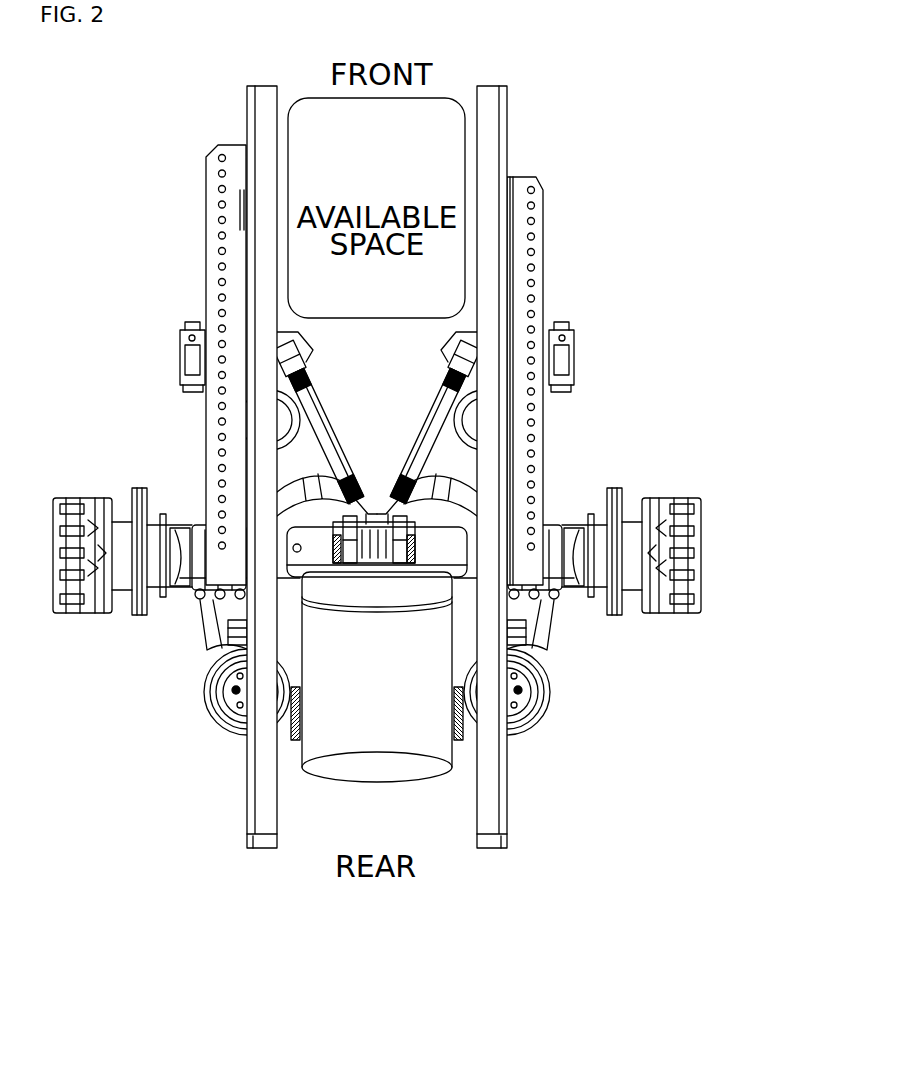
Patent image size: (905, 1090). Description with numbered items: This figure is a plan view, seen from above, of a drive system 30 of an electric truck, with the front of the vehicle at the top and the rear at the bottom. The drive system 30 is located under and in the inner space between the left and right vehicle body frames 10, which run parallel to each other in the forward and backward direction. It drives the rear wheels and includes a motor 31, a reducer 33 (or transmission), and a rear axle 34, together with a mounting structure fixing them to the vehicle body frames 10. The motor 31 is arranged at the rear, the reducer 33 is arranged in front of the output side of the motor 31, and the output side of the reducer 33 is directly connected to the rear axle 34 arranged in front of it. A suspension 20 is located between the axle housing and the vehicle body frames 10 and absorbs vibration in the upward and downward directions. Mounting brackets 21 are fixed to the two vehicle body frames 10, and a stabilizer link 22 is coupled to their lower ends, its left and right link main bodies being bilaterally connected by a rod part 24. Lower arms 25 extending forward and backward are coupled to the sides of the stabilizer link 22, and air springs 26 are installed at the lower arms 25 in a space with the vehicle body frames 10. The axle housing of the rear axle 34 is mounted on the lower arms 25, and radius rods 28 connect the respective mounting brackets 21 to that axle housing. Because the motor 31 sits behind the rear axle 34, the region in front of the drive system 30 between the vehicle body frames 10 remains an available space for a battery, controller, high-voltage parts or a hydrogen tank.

The vehicle body frames 10 is at (485, 795).
The suspension 20 is at (393, 604).
The mounting brackets 21 is at (563, 355).
The stabilizer link 22 is at (370, 483).
The rod part 24 is at (284, 453).
The lower arms 25 is at (525, 628).
The air springs 26 is at (545, 720).
The radius rods 28 is at (315, 410).
The drive system 30 is at (297, 632).
The motor 31 is at (330, 732).
The reducer 33 is at (440, 597).
The rear axle 34 is at (450, 547).